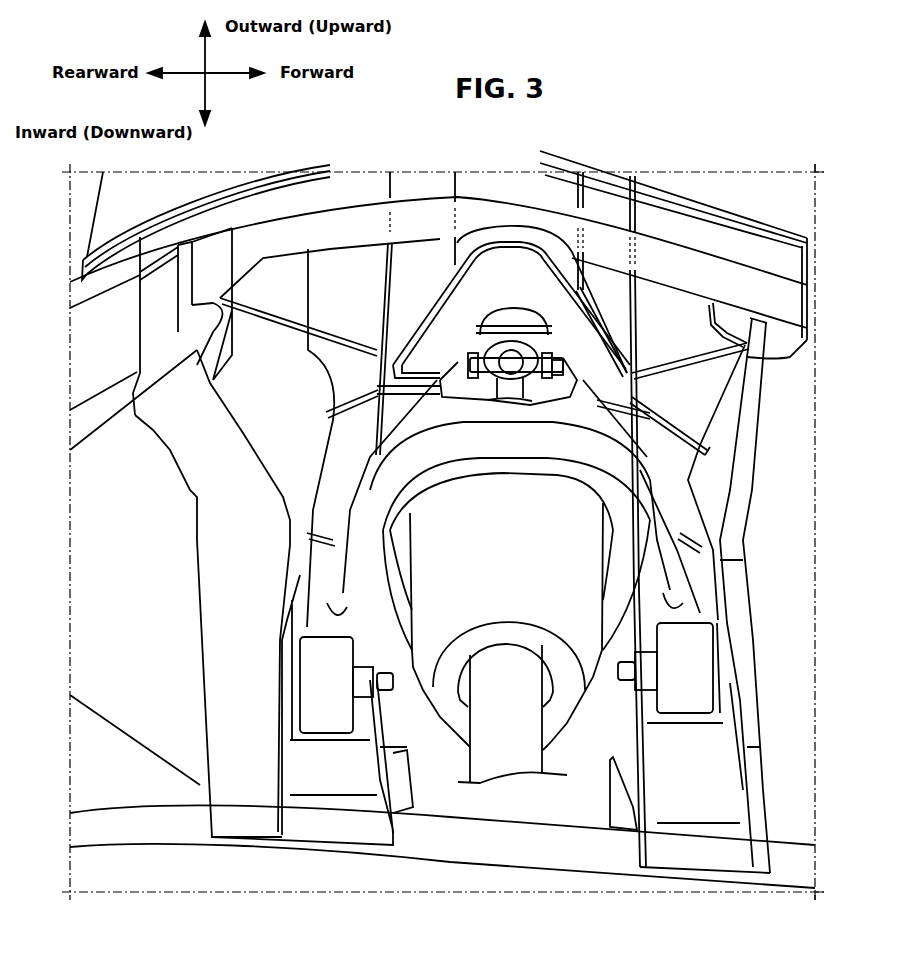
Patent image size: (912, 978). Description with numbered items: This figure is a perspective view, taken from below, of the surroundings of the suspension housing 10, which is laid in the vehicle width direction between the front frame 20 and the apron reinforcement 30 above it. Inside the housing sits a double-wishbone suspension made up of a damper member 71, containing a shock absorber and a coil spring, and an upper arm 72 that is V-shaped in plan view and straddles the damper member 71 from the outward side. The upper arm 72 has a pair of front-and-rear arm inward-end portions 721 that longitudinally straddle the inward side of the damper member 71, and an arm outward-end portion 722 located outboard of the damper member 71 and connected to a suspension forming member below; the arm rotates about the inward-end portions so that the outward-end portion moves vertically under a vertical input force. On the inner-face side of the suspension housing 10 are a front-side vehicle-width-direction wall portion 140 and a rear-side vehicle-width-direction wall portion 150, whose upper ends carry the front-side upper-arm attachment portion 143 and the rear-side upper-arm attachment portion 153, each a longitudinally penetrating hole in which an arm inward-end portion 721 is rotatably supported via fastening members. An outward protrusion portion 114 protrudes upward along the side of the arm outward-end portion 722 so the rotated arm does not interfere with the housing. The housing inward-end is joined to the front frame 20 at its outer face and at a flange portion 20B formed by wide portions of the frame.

The suspension housing 10 is at (677, 253).
The apron reinforcement 30 is at (113, 255).
The outward protrusion portion 114 is at (443, 320).
The arm outward-end portion 722 is at (493, 315).
The upper arm 72 is at (653, 490).
The damper member 71 is at (521, 566).
The arm inward-end portions 721 is at (348, 705).
The rear-side upper-arm attachment portion 153 is at (273, 677).
The front-side upper-arm attachment portion 143 is at (730, 670).
The rear-side vehicle-width-direction wall portion 150 is at (332, 787).
The front-side vehicle-width-direction wall portion 140 is at (693, 773).
The flange portion 20B is at (493, 847).
The front frame 20 is at (442, 880).